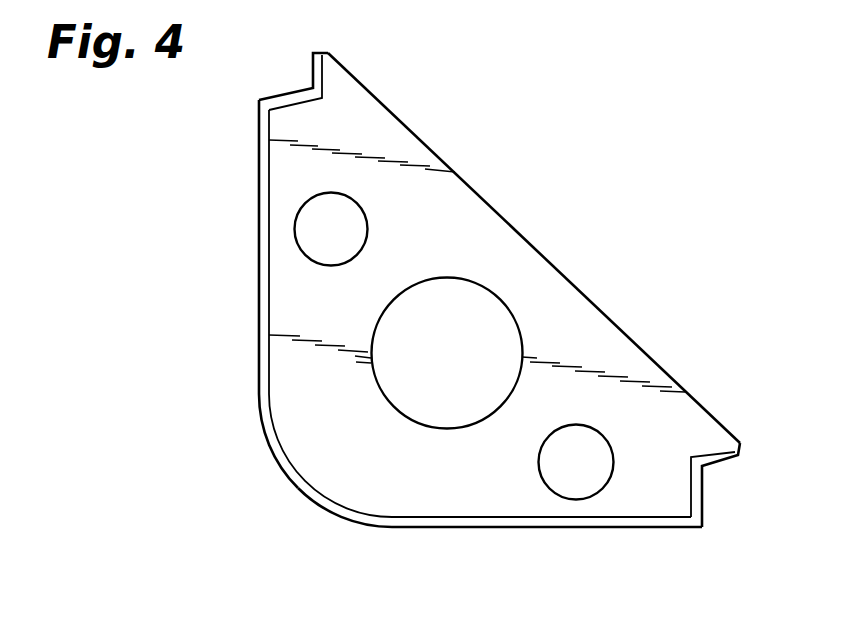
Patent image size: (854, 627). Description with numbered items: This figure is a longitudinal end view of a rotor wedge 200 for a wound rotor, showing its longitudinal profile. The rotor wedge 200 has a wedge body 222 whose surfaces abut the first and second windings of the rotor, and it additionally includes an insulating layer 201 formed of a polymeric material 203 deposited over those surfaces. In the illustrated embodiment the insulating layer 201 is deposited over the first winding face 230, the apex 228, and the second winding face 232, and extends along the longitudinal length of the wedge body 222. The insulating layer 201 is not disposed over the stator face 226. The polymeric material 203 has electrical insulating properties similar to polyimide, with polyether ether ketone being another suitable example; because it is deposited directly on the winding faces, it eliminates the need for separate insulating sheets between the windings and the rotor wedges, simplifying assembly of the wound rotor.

The rotor wedge 200 is at (125, 163).
The insulating layer 201 is at (292, 482).
The polymeric material 203 is at (340, 516).
The wedge body 222 is at (643, 485).
The stator face 226 is at (527, 240).
The apex 228 is at (275, 456).
The first winding face 230 is at (265, 271).
The second winding face 232 is at (522, 518).